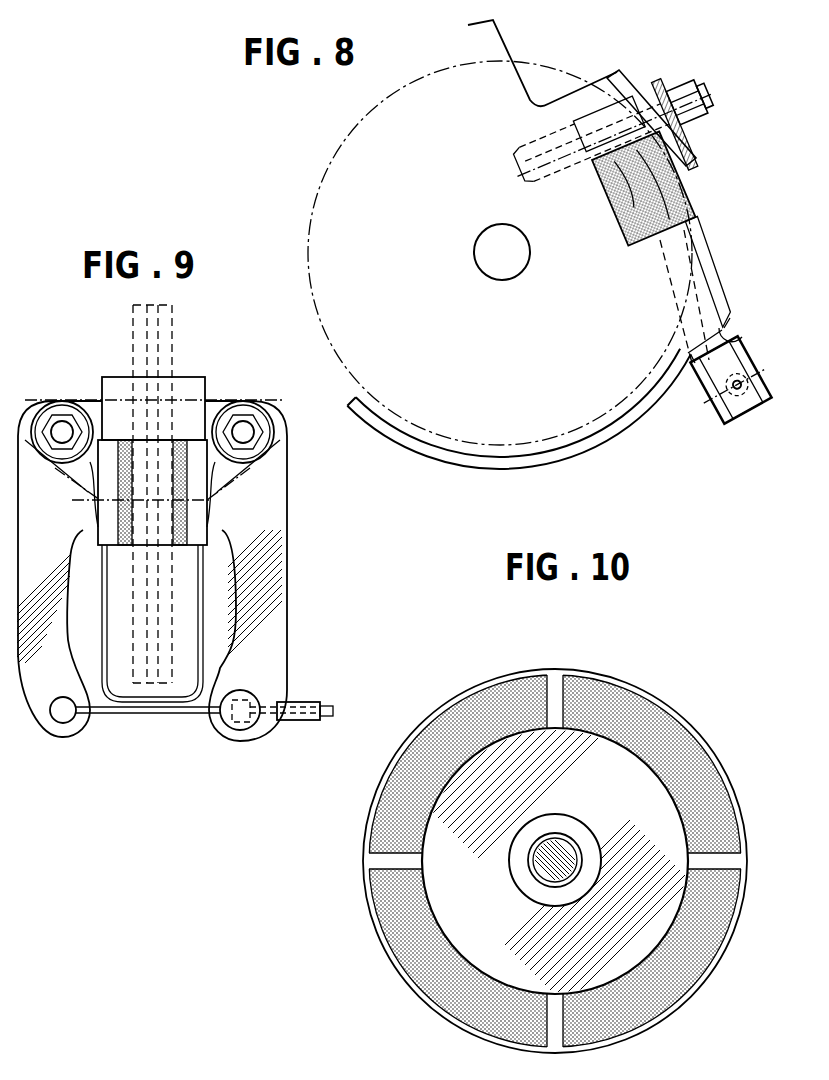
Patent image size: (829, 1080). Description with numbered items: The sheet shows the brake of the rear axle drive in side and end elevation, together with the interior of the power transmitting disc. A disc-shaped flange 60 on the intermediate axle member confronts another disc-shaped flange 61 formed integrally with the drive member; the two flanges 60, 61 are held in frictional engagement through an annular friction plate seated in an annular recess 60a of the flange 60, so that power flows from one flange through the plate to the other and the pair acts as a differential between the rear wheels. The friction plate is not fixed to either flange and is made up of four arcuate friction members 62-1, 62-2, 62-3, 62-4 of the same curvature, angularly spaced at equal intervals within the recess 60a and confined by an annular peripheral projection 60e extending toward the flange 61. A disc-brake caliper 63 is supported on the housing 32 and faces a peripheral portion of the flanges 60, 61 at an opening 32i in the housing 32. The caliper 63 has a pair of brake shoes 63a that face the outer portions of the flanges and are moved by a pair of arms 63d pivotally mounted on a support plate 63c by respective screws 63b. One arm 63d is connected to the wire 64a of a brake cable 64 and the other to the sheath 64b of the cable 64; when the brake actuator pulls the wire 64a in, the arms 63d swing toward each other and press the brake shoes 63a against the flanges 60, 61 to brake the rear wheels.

In FIG. 8, the housing 32 is at (605, 434).
In FIG. 8, the opening 32i is at (726, 313).
In FIG. 8, the disc-shaped flange 60 is at (469, 253).
In FIG. 10, the disc-shaped flange 60 is at (542, 846).
In FIG. 8, the disc-shaped flange 61 is at (310, 229).
In FIG. 10, the annular recess 60a is at (664, 767).
In FIG. 10, the annular peripheral projection 60e is at (697, 745).
In FIG. 10, the arcuate friction member 62-1 is at (612, 697).
In FIG. 10, the arcuate friction member 62-2 is at (693, 930).
In FIG. 10, the arcuate friction member 62-3 is at (400, 938).
In FIG. 10, the arcuate friction member 62-4 is at (483, 712).
In FIG. 8, the disc-brake caliper 63 is at (650, 204).
In FIG. 9, the disc-brake caliper 63 is at (181, 535).
In FIG. 8, the brake shoe 63a is at (644, 188).
In FIG. 9, the brake shoe 63a is at (178, 530).
In FIG. 8, the screw 63b is at (691, 117).
In FIG. 9, the screw 63b is at (62, 425).
In FIG. 8, the support plate 63c is at (610, 127).
In FIG. 9, the support plate 63c is at (212, 402).
In FIG. 8, the arm 63d is at (710, 271).
In FIG. 9, the arm 63d is at (255, 582).
In FIG. 9, the brake cable 64 is at (205, 712).
In FIG. 9, the wire 64a is at (167, 713).
In FIG. 9, the sheath 64b is at (292, 721).